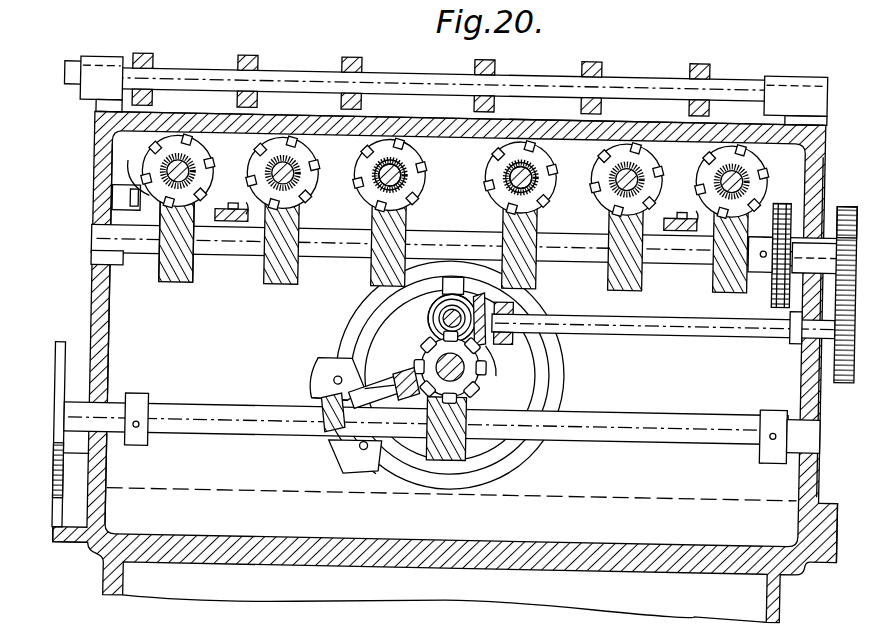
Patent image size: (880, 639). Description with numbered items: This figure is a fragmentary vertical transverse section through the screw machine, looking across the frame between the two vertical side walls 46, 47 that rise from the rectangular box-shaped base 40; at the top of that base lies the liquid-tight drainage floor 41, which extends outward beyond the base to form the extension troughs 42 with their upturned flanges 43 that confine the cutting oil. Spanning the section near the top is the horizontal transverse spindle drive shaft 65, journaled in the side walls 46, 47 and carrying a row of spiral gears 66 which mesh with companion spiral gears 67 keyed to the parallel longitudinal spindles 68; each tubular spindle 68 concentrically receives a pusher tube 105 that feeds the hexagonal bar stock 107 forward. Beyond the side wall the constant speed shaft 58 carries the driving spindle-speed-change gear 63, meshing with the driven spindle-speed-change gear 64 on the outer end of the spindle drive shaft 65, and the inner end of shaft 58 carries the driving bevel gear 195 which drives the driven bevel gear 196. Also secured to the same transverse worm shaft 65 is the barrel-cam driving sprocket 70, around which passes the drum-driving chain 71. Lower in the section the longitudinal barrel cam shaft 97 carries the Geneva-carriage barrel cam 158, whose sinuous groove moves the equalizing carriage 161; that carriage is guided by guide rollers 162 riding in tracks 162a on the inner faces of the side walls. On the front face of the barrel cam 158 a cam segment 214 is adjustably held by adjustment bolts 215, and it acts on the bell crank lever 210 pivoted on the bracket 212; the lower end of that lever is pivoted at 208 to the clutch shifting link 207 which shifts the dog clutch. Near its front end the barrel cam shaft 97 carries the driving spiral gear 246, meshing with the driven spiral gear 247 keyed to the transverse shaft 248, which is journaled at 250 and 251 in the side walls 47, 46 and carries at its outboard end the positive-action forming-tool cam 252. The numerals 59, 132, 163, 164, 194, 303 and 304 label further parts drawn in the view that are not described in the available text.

The base 40 is at (337, 602).
The drainage floor 41 is at (323, 542).
The extension troughs 42 is at (72, 551).
The upturned flanges 43 is at (63, 490).
The side wall 46 is at (558, 124).
The side wall 47 is at (111, 341).
The constant speed shaft 58 is at (675, 322).
The collar 59 is at (505, 333).
The driving spindle-speed-change gear 63 is at (842, 378).
The driven spindle-speed-change gear 64 is at (844, 197).
The spindle drive shaft 65 is at (223, 258).
The spiral gears 66 is at (284, 285).
The companion spiral gears 67 is at (207, 176).
The spindles 68 is at (508, 165).
The barrel-cam driving sprocket 70 is at (773, 268).
The drum-driving chain 71 is at (776, 195).
The barrel cam shaft 97 is at (438, 366).
The pusher tube 105 is at (522, 183).
The bar stock 107 is at (355, 178).
The bushing 132 is at (503, 177).
The Geneva-carriage barrel cam 158 is at (350, 310).
The equalizing carriage 161 is at (324, 230).
The guide rollers 162 is at (108, 204).
The tracks 162a is at (133, 167).
The lug 163 is at (241, 209).
The block 164 is at (240, 202).
The ring 194 is at (445, 315).
The driving bevel gear 195 is at (484, 346).
The driven bevel gear 196 is at (437, 318).
The clutch shifting link 207 is at (398, 387).
The pivot 208 is at (405, 402).
The bell crank lever 210 is at (341, 371).
The bracket 212 is at (320, 404).
The cam segment 214 is at (326, 375).
The adjustment bolts 215 is at (326, 390).
The driving spiral gear 246 is at (468, 325).
The driven spiral gear 247 is at (446, 460).
The transverse shaft 248 is at (607, 437).
The journal 250 is at (130, 405).
The journal 251 is at (763, 410).
The positive-action forming-tool cam 252 is at (62, 352).
The shaft 303 is at (295, 73).
The collars 304 is at (466, 68).